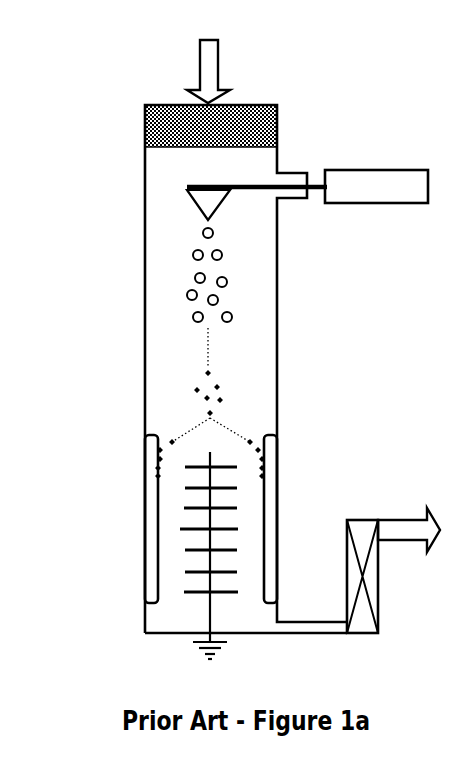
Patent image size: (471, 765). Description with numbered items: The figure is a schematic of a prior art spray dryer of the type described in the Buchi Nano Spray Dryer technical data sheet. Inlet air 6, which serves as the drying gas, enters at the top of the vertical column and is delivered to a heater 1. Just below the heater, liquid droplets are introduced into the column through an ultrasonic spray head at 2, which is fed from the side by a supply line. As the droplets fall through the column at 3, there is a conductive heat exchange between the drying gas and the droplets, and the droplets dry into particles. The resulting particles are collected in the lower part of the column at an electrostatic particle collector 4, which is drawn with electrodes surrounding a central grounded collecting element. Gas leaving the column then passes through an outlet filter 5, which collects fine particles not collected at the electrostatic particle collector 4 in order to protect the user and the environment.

The heater 1 is at (217, 369).
The ultrasonic spray head 2 is at (307, 209).
The conductive heat exchange zone 3 is at (176, 353).
The electrostatic particle collector 4 is at (182, 547).
The outlet filter 5 is at (393, 570).
The inlet air 6 is at (183, 69).